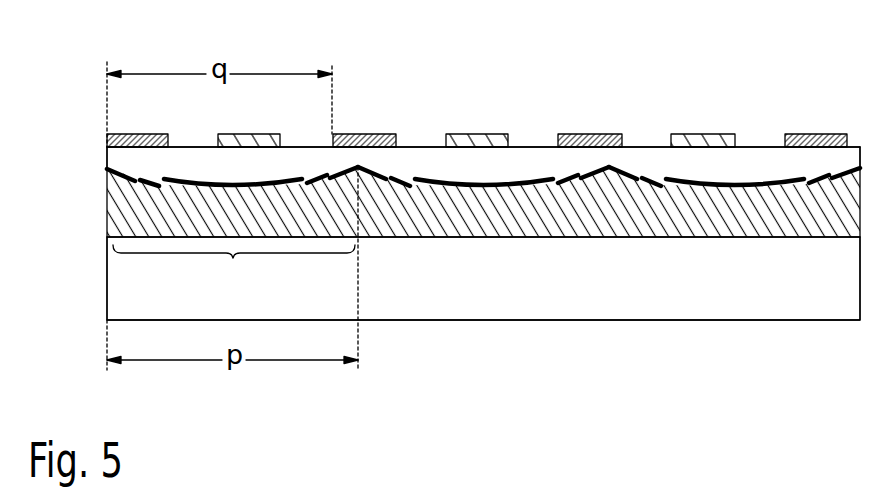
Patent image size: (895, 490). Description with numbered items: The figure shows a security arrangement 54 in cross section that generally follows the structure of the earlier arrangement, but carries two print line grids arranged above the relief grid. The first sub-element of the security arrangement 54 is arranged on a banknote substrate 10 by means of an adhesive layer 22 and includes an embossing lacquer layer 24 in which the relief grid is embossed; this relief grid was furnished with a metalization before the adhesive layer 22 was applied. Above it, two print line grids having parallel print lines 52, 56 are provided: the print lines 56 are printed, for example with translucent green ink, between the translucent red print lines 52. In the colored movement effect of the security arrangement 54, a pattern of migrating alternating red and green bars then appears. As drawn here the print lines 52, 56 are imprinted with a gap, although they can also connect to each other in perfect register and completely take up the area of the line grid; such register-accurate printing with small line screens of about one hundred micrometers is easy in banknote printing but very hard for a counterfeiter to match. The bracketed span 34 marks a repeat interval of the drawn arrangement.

The security arrangement 54 is at (82, 53).
The banknote substrate 10 is at (117, 272).
The adhesive layer 22 is at (116, 209).
The embossing lacquer layer 24 is at (116, 161).
The print lines 52 is at (376, 134).
The print lines 56 is at (480, 134).
The unit cell 34 is at (234, 269).